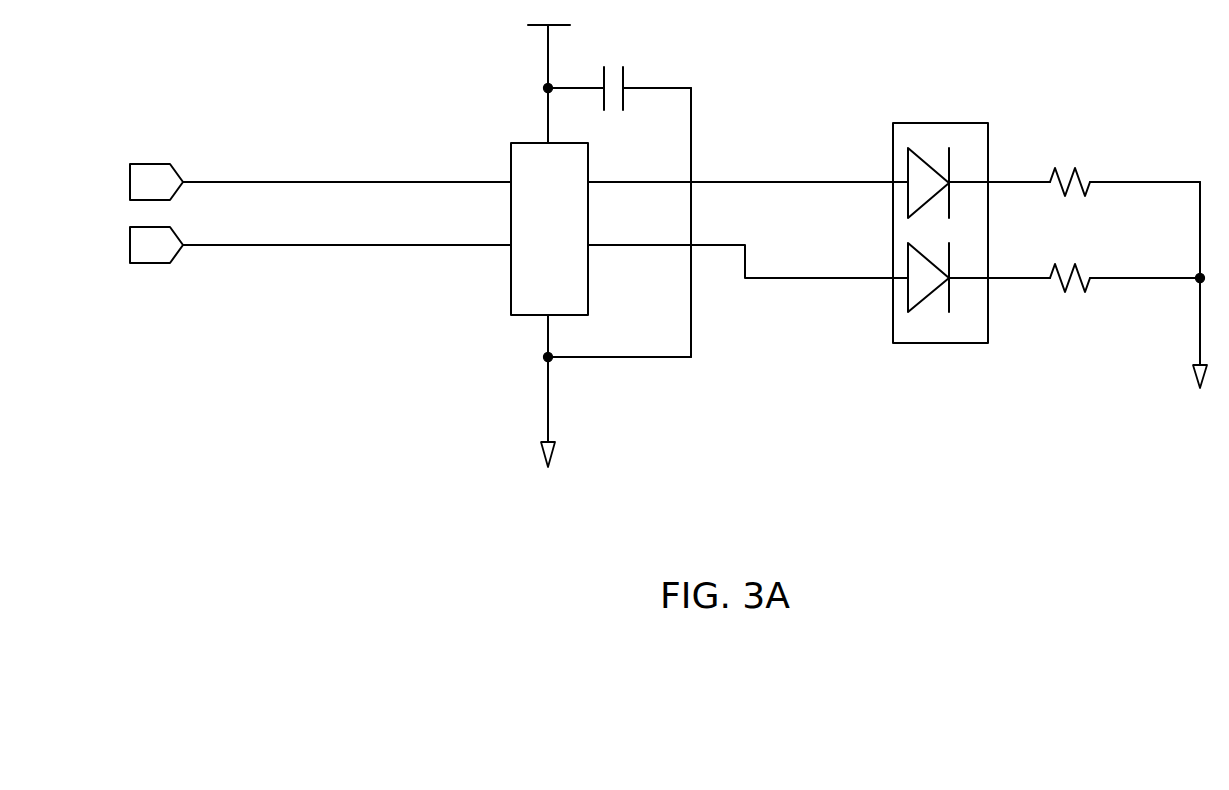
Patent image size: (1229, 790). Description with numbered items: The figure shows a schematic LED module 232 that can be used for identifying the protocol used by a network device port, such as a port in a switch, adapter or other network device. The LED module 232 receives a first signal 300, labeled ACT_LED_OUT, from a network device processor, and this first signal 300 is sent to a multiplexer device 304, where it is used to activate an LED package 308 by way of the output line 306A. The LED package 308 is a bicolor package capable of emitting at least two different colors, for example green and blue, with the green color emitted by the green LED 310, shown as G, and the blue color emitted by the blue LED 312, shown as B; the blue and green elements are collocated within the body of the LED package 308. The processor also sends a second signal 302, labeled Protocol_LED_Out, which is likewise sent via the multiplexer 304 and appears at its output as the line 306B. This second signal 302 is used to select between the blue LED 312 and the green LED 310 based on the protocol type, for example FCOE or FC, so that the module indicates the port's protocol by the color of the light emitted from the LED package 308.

The LED module 232 is at (317, 429).
The first signal 300 is at (250, 248).
The second signal 302 is at (197, 180).
The multiplexer device 304 is at (511, 302).
The output line from multiplexer 306A is at (765, 182).
The output line from multiplexer 306B is at (817, 277).
The LED package 308 is at (975, 123).
The green LED 310 is at (927, 160).
The blue LED 312 is at (927, 297).